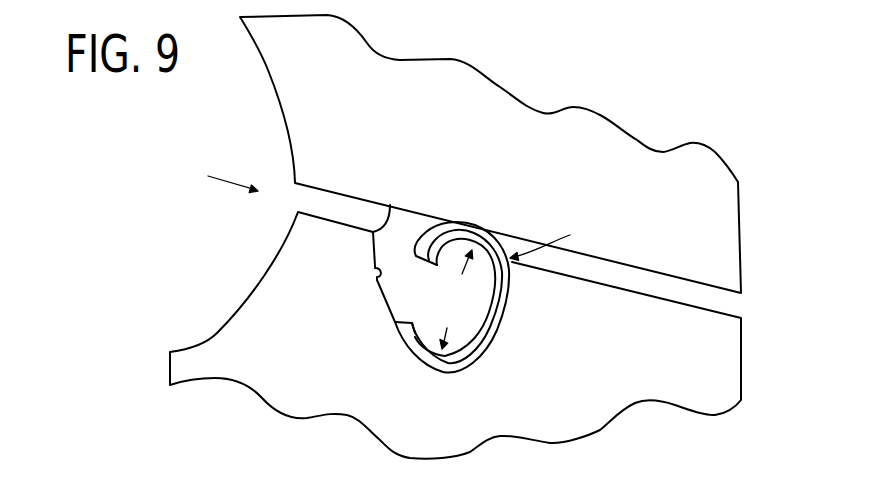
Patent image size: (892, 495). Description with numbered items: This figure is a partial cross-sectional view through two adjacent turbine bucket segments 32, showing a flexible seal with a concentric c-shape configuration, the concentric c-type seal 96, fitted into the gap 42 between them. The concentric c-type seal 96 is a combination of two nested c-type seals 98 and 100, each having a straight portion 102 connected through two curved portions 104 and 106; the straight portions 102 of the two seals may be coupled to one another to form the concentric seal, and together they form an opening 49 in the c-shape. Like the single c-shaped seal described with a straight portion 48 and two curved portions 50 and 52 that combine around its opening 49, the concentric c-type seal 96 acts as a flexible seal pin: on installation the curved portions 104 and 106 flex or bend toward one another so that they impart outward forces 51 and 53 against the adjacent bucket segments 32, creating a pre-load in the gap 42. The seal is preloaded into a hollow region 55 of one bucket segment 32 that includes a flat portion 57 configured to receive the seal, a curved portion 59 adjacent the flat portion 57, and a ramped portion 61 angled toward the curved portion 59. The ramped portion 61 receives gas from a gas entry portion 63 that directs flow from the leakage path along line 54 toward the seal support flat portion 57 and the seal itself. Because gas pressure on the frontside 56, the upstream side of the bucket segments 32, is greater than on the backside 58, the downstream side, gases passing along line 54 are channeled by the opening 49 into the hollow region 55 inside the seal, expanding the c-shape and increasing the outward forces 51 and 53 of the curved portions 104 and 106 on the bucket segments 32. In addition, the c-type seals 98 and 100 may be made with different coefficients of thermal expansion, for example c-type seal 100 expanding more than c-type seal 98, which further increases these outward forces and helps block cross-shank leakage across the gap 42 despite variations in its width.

The bucket segments 32 is at (573, 107).
The gap 42 is at (350, 210).
The straight portion 48 is at (480, 365).
The opening 49 is at (430, 303).
The curved portion 50 is at (395, 335).
The outward force 51 is at (418, 357).
The curved portion 52 is at (416, 238).
The outward force 53 is at (459, 240).
The line 54 is at (228, 182).
The hollow region 55 is at (462, 316).
The frontside 56 is at (213, 279).
The flat portion 57 is at (510, 303).
The backside 58 is at (785, 321).
The curved portion 59 is at (407, 357).
The ramped portion 61 is at (372, 278).
The gas entry portion 63 is at (390, 205).
The concentric c-type seal 96 is at (545, 233).
The c-type seal 98 is at (512, 249).
The c-type seal 100 is at (462, 316).
The straight portion 102 is at (508, 294).
The curved portion 104 is at (447, 374).
The curved portion 106 is at (490, 232).